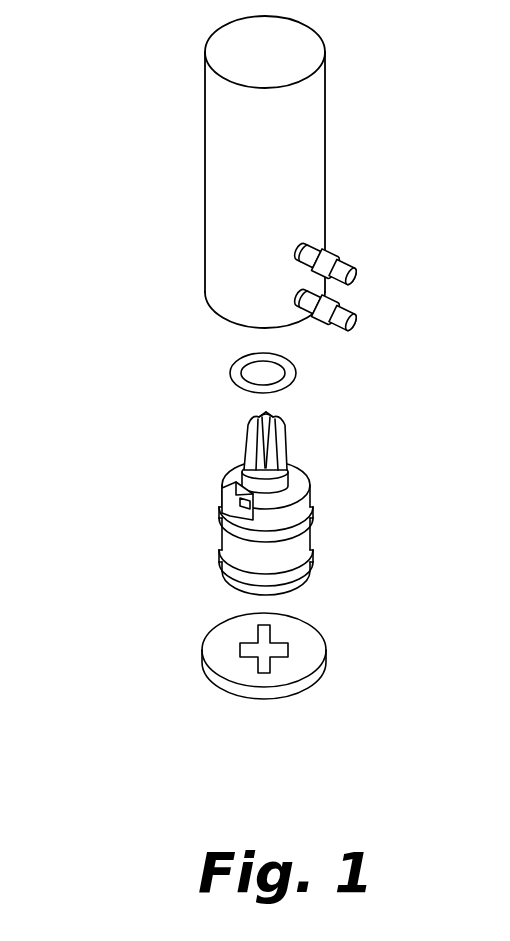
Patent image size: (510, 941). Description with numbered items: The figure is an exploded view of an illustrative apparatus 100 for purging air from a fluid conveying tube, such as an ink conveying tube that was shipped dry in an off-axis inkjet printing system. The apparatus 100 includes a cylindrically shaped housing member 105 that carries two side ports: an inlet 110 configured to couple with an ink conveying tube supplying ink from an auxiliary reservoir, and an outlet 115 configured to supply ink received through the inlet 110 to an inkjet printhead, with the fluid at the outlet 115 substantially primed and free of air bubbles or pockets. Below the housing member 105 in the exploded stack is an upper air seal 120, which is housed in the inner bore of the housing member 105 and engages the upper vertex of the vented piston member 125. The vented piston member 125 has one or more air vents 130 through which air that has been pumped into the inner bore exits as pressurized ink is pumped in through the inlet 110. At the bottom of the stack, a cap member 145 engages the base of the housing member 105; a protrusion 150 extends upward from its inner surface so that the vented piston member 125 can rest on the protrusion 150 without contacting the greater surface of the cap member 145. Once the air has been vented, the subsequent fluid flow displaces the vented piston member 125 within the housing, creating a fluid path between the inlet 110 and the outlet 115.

The apparatus 100 is at (178, 192).
The housing member 105 is at (325, 162).
The inlet 110 is at (325, 318).
The outlet 115 is at (334, 250).
The upper air seal 120 is at (287, 380).
The vented piston member 125 is at (292, 503).
The air vent 130 is at (242, 502).
The cap member 145 is at (323, 644).
The protrusion 150 is at (267, 648).